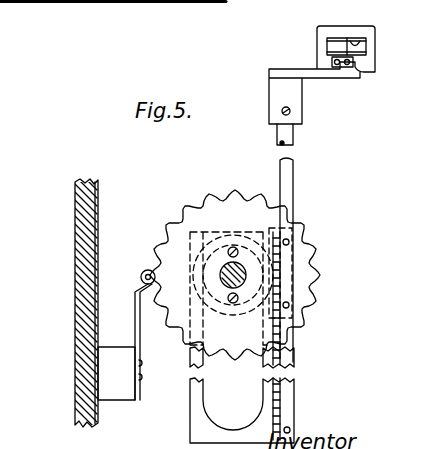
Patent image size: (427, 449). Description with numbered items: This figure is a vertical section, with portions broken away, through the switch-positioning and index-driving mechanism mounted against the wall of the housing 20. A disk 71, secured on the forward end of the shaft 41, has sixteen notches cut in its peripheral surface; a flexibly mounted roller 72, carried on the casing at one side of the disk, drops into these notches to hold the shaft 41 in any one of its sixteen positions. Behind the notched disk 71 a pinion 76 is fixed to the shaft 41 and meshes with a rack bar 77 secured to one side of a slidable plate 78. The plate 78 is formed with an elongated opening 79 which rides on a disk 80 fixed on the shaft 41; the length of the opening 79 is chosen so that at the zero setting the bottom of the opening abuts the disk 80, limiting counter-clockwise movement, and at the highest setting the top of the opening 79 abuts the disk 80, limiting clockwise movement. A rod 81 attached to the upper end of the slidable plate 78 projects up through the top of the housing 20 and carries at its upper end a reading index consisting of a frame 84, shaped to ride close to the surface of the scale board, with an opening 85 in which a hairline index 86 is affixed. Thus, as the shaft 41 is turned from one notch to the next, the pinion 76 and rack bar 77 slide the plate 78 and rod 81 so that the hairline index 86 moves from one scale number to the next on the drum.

The housing 20 is at (74, 198).
The shaft 41 is at (224, 268).
The disk 71 is at (214, 194).
The roller 72 is at (147, 270).
The pinion 76 is at (228, 232).
The rack bar 77 is at (266, 232).
The slidable plate 78 is at (190, 406).
The elongated opening 79 is at (272, 393).
The disk 80 is at (233, 290).
The rod 81 is at (294, 173).
The frame 84 is at (317, 45).
The opening 85 is at (360, 48).
The hairline index 86 is at (343, 50).